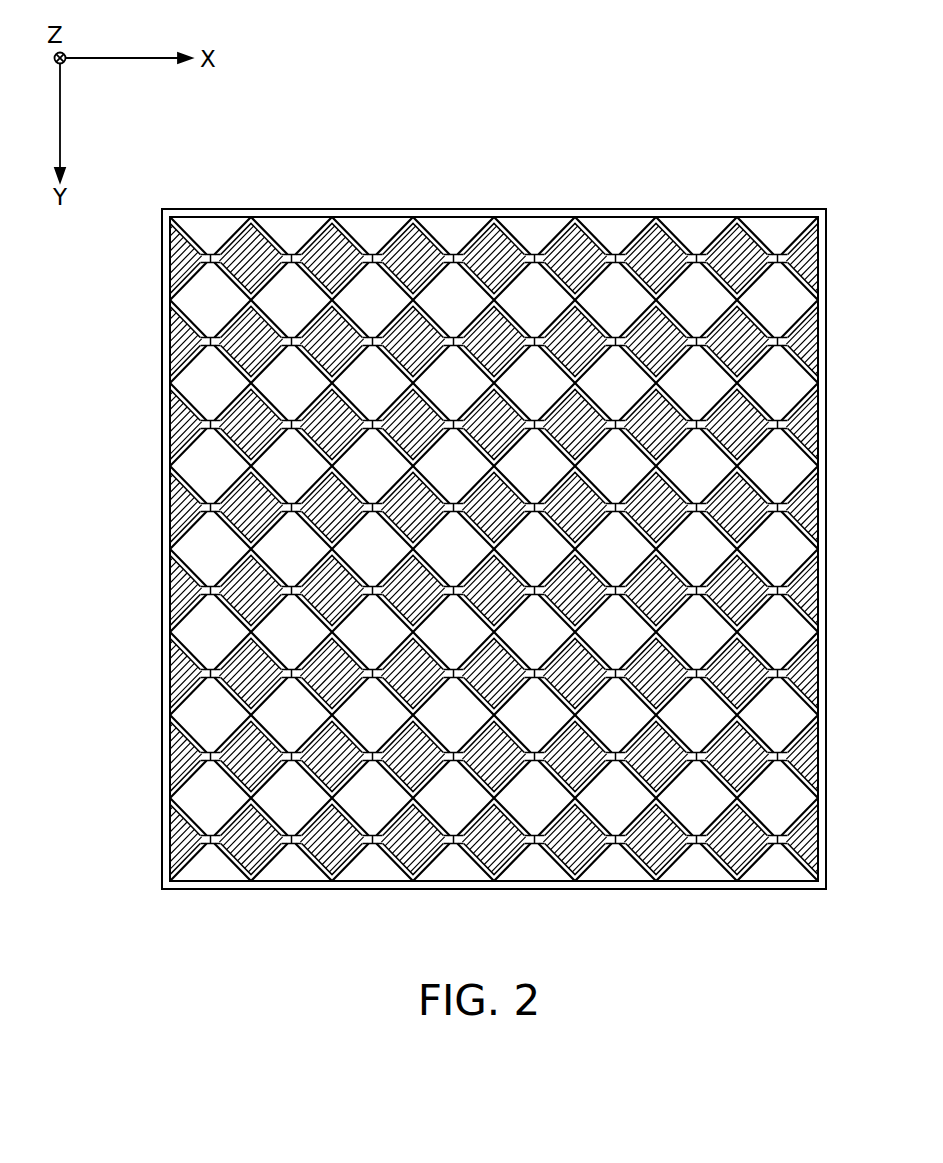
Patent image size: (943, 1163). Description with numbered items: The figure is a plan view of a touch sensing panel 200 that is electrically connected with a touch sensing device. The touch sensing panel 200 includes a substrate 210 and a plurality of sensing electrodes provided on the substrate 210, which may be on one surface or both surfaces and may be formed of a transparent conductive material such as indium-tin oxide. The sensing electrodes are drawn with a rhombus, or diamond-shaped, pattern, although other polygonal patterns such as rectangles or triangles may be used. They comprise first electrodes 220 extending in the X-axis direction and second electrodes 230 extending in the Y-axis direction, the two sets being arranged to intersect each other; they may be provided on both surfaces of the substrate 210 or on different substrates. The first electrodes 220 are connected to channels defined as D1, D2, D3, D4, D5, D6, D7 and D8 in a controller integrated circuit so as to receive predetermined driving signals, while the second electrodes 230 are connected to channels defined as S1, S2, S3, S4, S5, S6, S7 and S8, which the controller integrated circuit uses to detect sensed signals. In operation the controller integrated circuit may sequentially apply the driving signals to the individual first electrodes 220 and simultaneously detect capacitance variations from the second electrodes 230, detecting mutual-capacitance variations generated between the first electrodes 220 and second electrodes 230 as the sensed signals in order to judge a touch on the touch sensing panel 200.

The touch sensing panel 200 is at (603, 108).
The substrate 210 is at (165, 209).
The first electrodes 220 is at (170, 277).
The second electrodes 230 is at (223, 227).
The channel S1 is at (210, 217).
The channel S2 is at (292, 217).
The channel S3 is at (372, 217).
The channel S4 is at (454, 217).
The channel S5 is at (534, 217).
The channel S6 is at (616, 217).
The channel S7 is at (696, 217).
The channel S8 is at (778, 217).
The channel D1 is at (170, 258).
The channel D2 is at (170, 342).
The channel D3 is at (170, 424).
The channel D4 is at (170, 508).
The channel D5 is at (170, 590).
The channel D6 is at (170, 674).
The channel D7 is at (170, 756).
The channel D8 is at (170, 840).